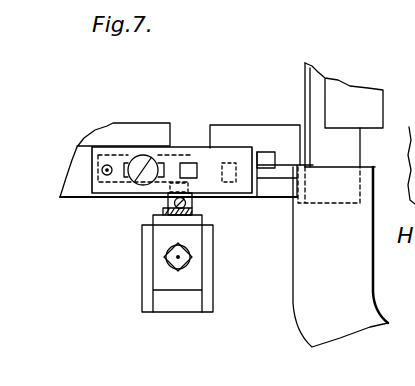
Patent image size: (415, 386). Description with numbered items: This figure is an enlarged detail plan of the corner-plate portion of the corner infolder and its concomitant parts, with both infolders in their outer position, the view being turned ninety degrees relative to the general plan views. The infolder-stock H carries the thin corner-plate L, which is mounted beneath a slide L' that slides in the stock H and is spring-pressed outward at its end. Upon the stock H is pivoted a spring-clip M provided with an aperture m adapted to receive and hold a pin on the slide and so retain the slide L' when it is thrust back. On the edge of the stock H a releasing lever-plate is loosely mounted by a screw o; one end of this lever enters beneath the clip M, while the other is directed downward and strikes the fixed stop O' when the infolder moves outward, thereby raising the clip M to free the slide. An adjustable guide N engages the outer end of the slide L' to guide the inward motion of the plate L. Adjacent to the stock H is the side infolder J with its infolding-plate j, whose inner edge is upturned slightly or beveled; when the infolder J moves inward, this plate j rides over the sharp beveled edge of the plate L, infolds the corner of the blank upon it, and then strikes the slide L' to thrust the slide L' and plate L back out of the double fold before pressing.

The infolder-stock H is at (78, 186).
The spring-clip M is at (204, 148).
The corner-plate L is at (264, 132).
The slide L' is at (285, 165).
The infolder J is at (344, 95).
The infolding-plate j is at (341, 147).
The adjustable guide N is at (340, 205).
The aperture m is at (197, 171).
The screw o is at (168, 203).
The fixed stop O' is at (191, 263).